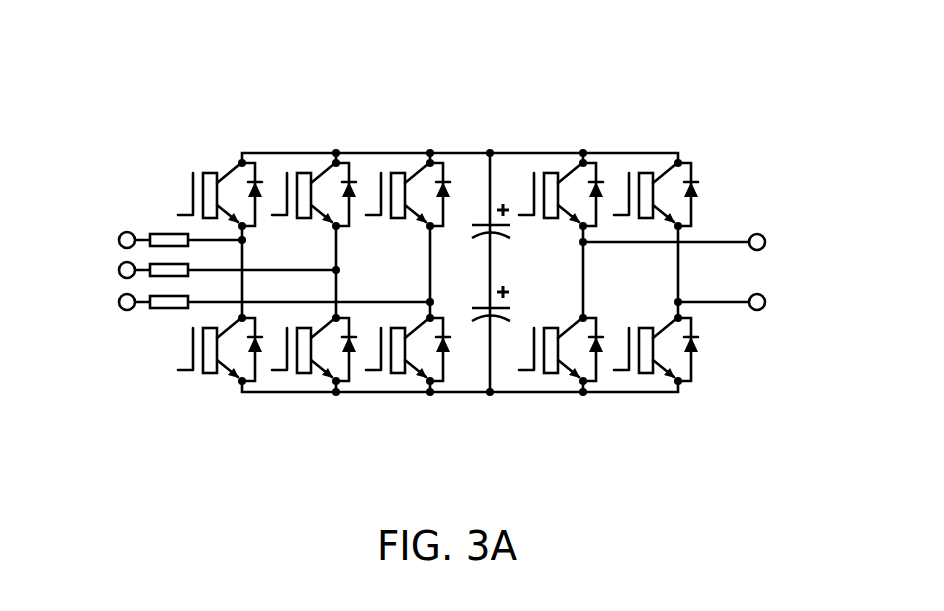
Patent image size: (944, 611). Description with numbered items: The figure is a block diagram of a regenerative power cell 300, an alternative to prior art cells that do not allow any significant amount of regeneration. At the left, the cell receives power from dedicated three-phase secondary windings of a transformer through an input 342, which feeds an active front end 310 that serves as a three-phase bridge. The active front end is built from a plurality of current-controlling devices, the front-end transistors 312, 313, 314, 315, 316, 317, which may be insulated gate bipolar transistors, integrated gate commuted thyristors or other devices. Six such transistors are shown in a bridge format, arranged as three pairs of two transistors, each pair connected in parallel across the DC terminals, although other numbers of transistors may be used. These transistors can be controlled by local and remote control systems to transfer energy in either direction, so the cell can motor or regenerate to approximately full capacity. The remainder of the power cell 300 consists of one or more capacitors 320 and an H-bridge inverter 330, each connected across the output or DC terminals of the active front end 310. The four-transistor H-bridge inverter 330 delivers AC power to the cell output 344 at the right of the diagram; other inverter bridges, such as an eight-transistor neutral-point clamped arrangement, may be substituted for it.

The power cell 300 is at (186, 64).
The active front end 310 is at (449, 118).
The front-end transistor 312 is at (184, 178).
The front-end transistor 313 is at (305, 168).
The front-end transistor 314 is at (402, 163).
The front-end transistor 315 is at (208, 381).
The front-end transistor 316 is at (307, 380).
The front-end transistor 317 is at (405, 380).
The capacitor 320 is at (538, 118).
The H-bridge inverter 330 is at (702, 118).
The input 342 is at (92, 207).
The output 344 is at (788, 208).